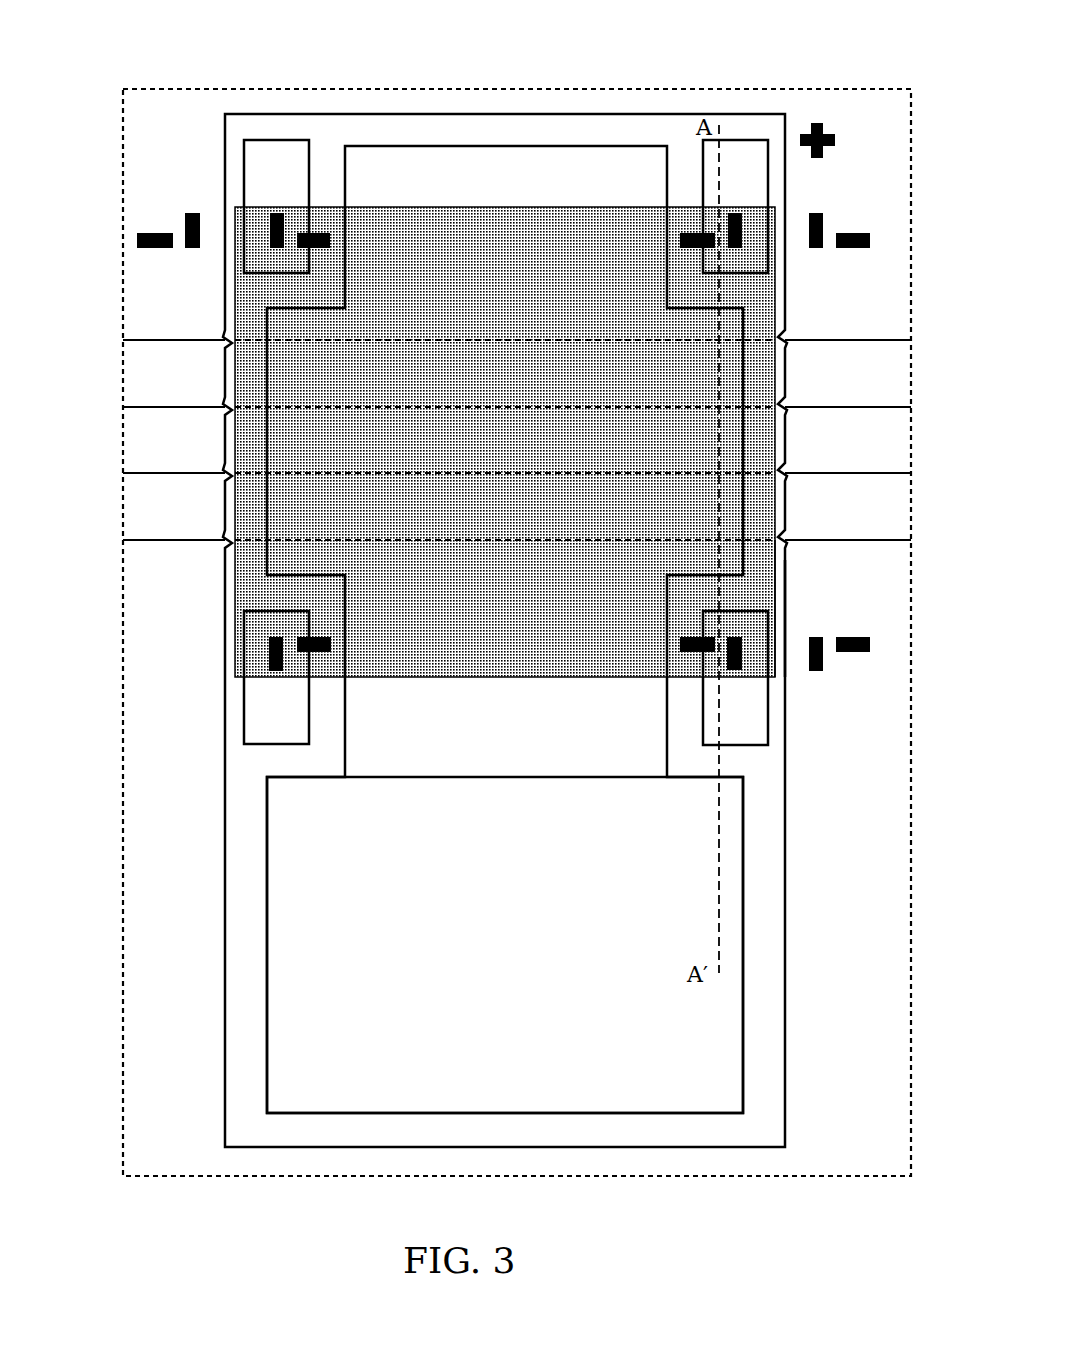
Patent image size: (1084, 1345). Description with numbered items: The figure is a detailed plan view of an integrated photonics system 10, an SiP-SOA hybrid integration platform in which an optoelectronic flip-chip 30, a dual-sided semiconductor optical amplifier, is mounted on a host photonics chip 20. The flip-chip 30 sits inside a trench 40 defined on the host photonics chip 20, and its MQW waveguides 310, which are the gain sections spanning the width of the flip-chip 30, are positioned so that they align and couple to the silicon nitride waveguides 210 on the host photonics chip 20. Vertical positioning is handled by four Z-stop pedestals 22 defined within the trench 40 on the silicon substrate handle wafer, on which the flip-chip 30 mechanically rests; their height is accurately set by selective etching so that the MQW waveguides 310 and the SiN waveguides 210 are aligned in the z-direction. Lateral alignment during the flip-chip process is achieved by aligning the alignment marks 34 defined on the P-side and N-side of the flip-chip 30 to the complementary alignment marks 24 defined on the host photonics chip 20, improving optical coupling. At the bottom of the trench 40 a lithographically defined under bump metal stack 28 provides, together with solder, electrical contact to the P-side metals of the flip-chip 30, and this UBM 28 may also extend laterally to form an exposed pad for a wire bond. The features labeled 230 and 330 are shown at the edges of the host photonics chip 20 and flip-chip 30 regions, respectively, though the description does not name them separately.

The integrated photonics system 10 is at (140, 62).
The host photonics chip 20 is at (155, 173).
The Z-Stop pedestals 22 is at (278, 140).
The alignment marks 24 is at (820, 215).
The Under Bump Metal stack (UBM) 28 is at (505, 945).
The optoelectronic flip-chip 30 is at (453, 207).
The alignment marks 34 is at (698, 233).
The trench 40 is at (242, 803).
The SiN waveguides 210 is at (148, 406).
The edge region 230 is at (787, 618).
The MQW waveguides 310 is at (755, 407).
The edge region 330 is at (777, 595).